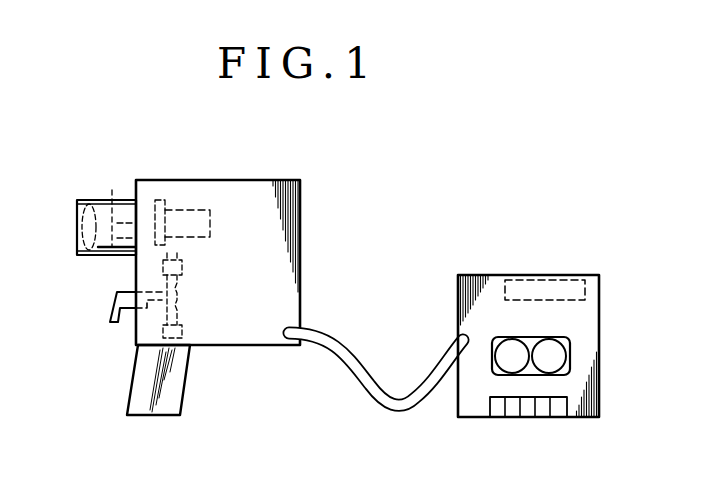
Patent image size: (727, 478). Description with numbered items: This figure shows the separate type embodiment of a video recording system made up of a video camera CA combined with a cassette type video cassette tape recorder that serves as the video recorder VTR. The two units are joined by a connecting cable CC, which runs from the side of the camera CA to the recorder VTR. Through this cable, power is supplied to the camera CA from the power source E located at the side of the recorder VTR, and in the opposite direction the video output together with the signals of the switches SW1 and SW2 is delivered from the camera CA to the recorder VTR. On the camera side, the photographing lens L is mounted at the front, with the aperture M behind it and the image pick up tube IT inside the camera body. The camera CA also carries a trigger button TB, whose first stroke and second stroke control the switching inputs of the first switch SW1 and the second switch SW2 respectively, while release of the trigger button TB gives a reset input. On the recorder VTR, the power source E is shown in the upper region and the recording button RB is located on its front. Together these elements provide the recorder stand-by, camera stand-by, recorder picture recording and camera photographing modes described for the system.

The photographing lens L is at (86, 207).
The aperture M is at (108, 208).
The image pick up tube IT is at (183, 212).
The video camera CA is at (265, 176).
The first switch SW1 is at (183, 272).
The second switch SW2 is at (183, 333).
The trigger button TB is at (110, 313).
The connecting cable CC is at (345, 336).
The video tape recorder VTR is at (596, 258).
The power source E is at (586, 295).
The recording button RB is at (515, 418).